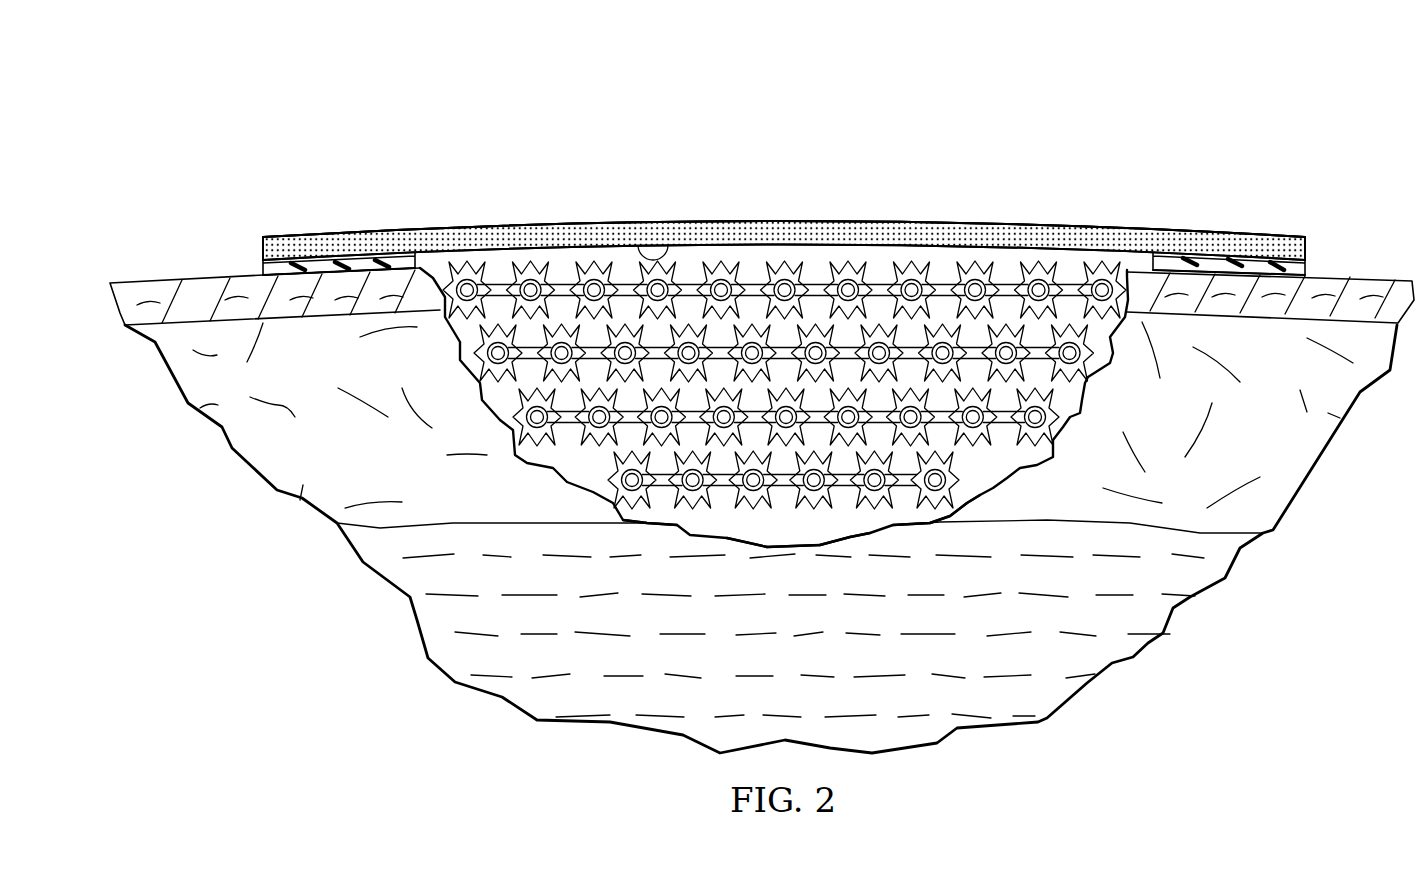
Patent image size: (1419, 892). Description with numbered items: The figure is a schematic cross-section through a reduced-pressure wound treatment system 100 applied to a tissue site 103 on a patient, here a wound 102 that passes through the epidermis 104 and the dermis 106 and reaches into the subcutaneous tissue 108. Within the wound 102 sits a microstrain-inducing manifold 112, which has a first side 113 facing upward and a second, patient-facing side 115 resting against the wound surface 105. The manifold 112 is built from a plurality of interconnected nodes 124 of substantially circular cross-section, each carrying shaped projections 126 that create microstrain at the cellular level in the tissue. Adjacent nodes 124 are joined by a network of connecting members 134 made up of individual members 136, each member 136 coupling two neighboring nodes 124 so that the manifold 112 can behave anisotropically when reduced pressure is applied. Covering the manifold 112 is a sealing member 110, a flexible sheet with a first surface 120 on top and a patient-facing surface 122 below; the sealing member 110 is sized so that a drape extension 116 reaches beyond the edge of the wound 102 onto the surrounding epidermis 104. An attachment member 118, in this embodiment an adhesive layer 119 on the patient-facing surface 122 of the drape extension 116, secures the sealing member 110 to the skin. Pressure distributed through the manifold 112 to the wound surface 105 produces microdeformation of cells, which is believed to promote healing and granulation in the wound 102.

The reduced-pressure wound treatment system 100 is at (1142, 118).
The wound 102 is at (783, 226).
The tissue site 103 is at (642, 528).
The epidermis 104 is at (120, 282).
The wound surface 105 is at (1080, 412).
The dermis 106 is at (328, 452).
The subcutaneous tissue 108 is at (768, 668).
The sealing member 110 is at (783, 215).
The microstrain-inducing manifold 112 is at (474, 352).
The first side 113 is at (746, 386).
The second, patient-facing side 115 is at (745, 506).
The drape extension 116 is at (372, 236).
The attachment member 118 is at (262, 271).
The adhesive layer 119 is at (264, 268).
The first surface 120 is at (784, 211).
The patient-facing surface 122 is at (645, 243).
The interconnected node 124 is at (955, 478).
The shaped projection 126 is at (983, 512).
The network of connecting members 134 is at (847, 497).
The member 136 is at (778, 495).